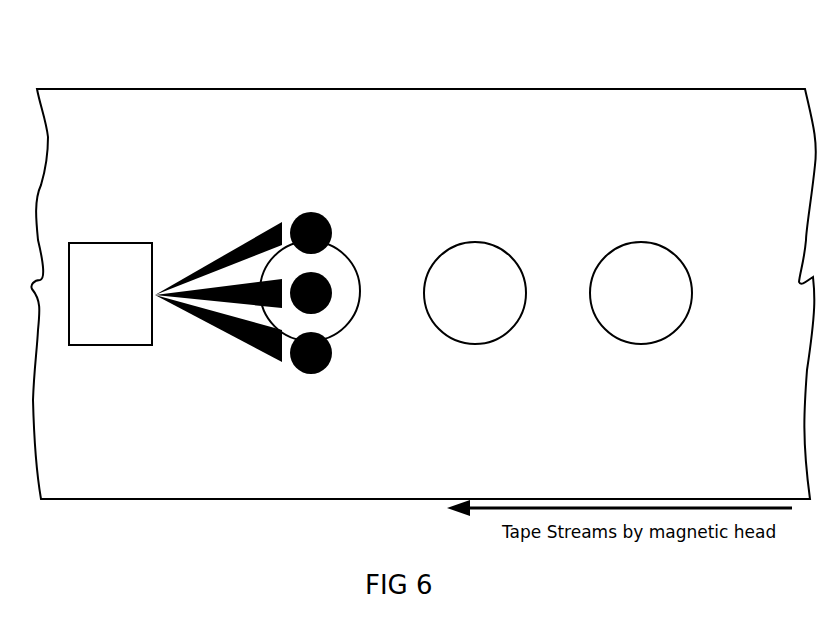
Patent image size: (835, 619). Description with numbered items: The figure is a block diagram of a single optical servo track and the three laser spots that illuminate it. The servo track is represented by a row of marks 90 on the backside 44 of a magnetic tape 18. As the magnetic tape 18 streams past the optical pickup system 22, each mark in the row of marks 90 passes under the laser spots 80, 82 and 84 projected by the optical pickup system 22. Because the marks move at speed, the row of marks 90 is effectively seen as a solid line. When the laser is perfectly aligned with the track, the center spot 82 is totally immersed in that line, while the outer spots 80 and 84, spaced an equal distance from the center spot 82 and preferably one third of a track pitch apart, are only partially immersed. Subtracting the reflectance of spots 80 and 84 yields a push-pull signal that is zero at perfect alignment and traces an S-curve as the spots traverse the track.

The magnetic tape 18 is at (503, 87).
The backside 44 is at (423, 258).
The optical pickup system 22 is at (102, 242).
The laser spot 80 is at (330, 212).
The laser spot 82 is at (330, 283).
The laser spot 84 is at (330, 372).
The row of marks 90 is at (710, 243).